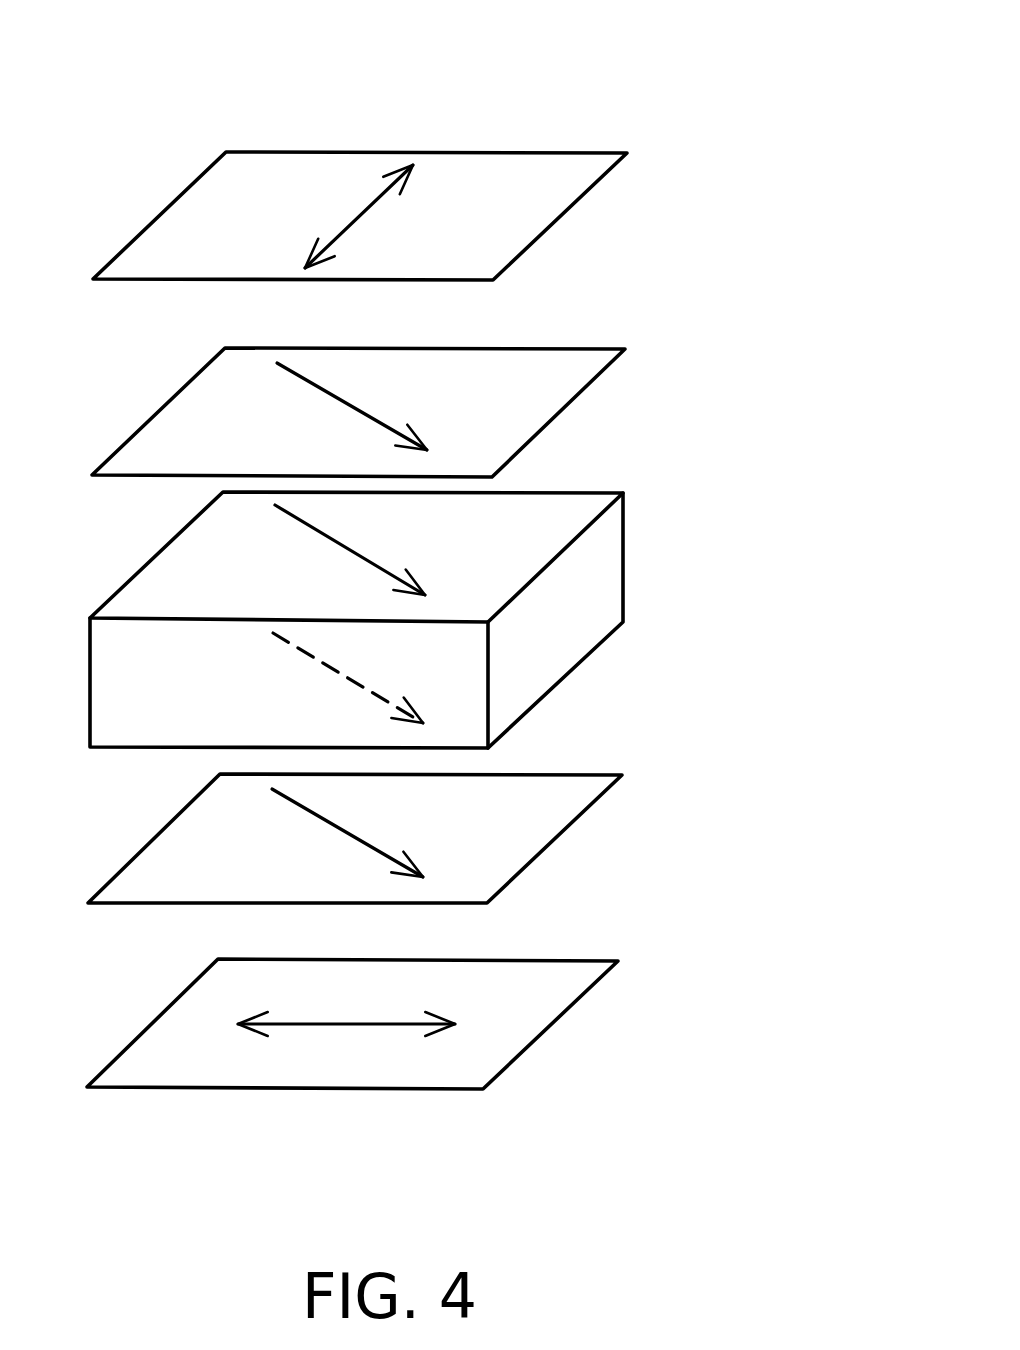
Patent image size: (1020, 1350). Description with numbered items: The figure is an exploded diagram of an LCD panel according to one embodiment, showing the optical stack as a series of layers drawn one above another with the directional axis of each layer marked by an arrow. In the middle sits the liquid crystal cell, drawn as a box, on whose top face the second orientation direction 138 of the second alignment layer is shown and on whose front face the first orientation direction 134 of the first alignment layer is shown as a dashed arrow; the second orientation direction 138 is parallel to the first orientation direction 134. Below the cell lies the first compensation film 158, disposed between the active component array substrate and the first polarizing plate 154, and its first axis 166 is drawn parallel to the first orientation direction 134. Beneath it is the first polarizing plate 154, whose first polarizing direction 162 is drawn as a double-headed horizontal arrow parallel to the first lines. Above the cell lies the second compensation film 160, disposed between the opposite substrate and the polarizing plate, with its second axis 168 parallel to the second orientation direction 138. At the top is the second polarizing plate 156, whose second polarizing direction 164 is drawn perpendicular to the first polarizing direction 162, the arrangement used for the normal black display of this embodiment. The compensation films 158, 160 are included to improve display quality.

The first orientation direction 134 is at (367, 687).
The second orientation direction 138 is at (370, 560).
The first polarizing plate 154 is at (548, 1000).
The second polarizing plate 156 is at (540, 217).
The first compensation film 158 is at (497, 846).
The second compensation film 160 is at (545, 405).
The first polarizing direction 162 is at (347, 1024).
The second polarizing direction 164 is at (358, 218).
The first axis 166 is at (350, 831).
The second axis 168 is at (373, 415).